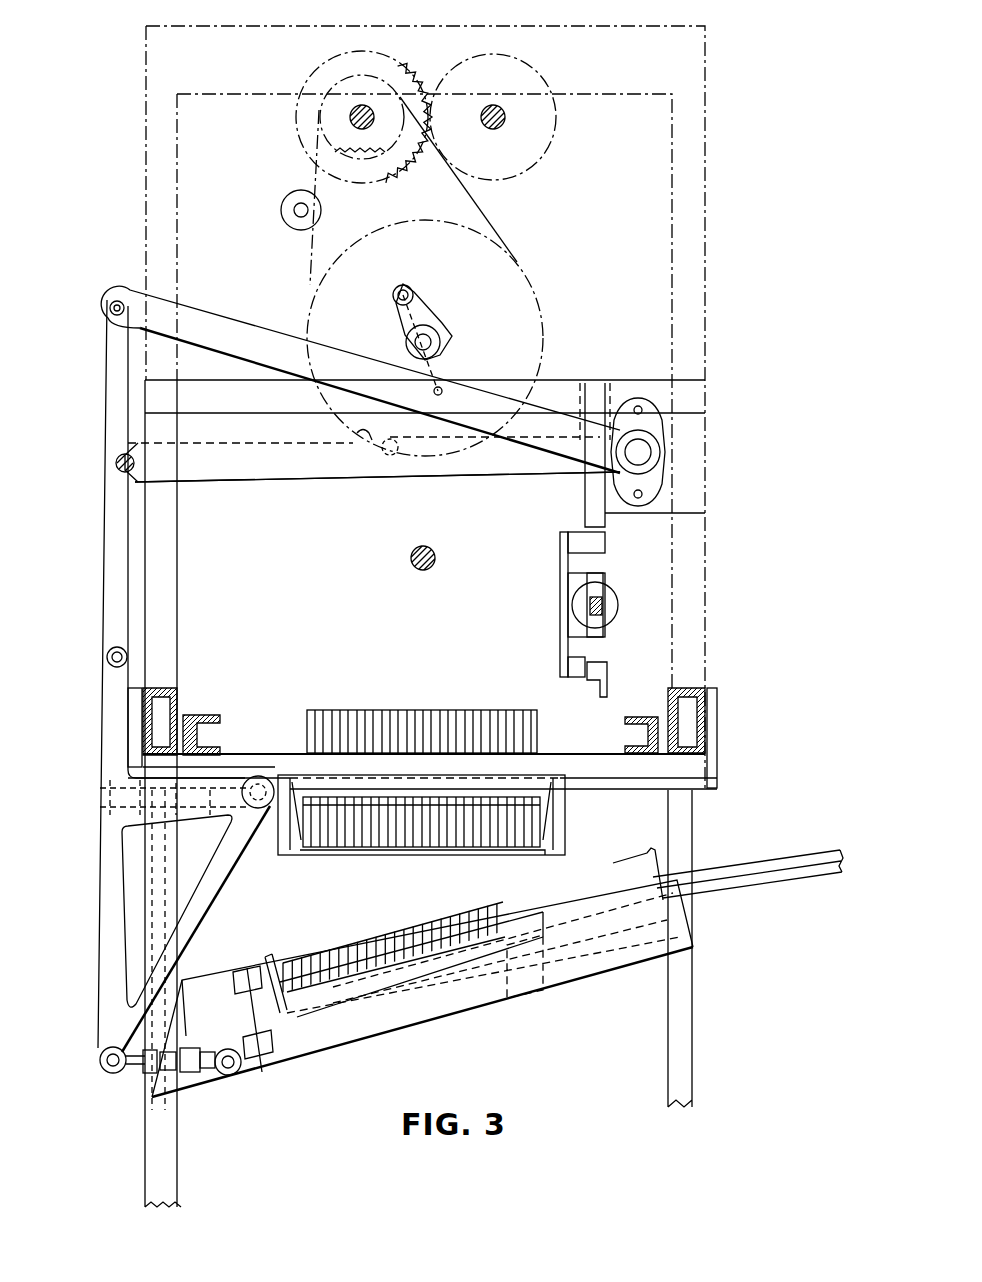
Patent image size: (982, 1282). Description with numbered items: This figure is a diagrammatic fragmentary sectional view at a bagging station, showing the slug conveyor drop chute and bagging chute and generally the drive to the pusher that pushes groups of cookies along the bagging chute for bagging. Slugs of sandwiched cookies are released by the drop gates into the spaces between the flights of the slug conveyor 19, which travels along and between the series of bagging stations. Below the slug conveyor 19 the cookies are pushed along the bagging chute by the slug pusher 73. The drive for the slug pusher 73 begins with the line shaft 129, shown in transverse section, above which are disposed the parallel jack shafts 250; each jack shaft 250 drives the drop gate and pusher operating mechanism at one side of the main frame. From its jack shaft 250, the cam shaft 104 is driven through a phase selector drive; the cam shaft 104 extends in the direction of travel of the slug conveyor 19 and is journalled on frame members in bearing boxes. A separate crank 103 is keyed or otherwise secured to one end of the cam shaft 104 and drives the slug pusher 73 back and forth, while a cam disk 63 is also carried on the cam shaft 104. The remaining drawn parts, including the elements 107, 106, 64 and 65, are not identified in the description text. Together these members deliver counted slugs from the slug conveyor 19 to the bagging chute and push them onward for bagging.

The jack shaft 250 is at (355, 118).
The pivot pin 107 is at (404, 285).
The crank 103 is at (410, 292).
The lever arm 106 is at (425, 302).
The cam shaft 104 is at (432, 342).
The rod 64 is at (358, 437).
The cam disk 63 is at (377, 450).
The pin 65 is at (403, 455).
The line shaft 129 is at (428, 570).
The slug conveyor 19 is at (540, 720).
The slug pusher 73 is at (268, 950).